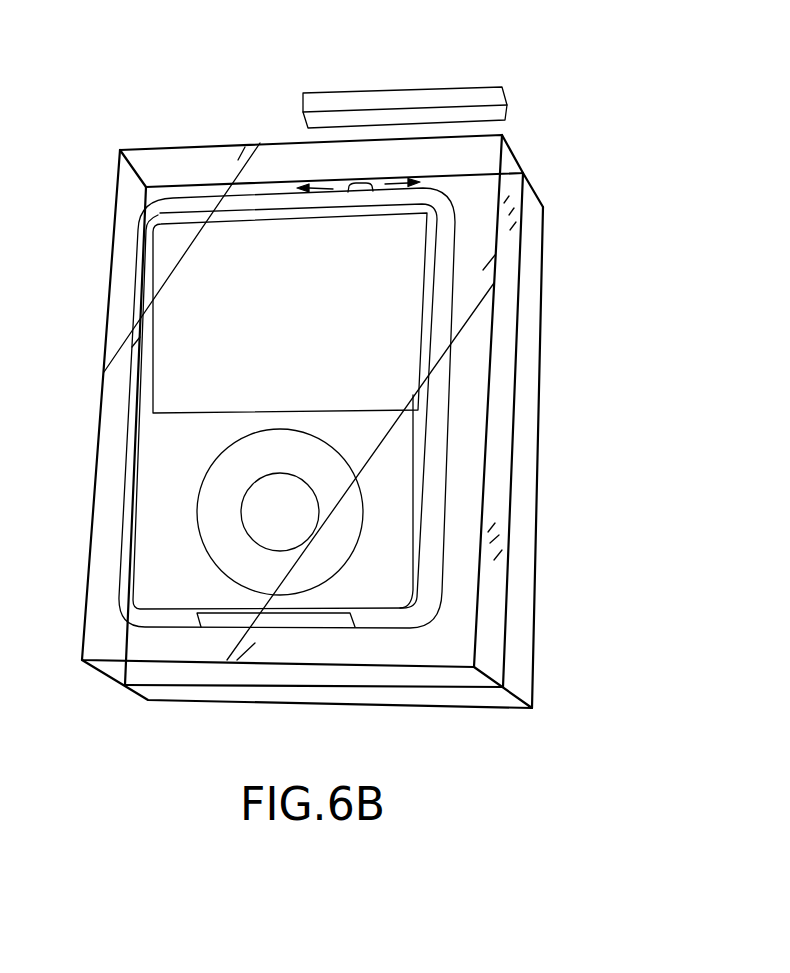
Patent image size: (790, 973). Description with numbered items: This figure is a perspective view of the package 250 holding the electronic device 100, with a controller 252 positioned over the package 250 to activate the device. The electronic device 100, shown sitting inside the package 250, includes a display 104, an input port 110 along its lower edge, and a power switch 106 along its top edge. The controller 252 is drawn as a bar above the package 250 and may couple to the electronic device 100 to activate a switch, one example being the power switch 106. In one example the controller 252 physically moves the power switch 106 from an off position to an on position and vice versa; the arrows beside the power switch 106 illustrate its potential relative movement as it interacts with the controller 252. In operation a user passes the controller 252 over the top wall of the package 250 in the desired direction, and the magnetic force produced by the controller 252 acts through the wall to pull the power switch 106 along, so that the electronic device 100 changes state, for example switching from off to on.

The electronic device 100 is at (397, 540).
The display 104 is at (413, 317).
The power switch 106 is at (372, 182).
The input port 110 is at (293, 630).
The package 250 is at (582, 419).
The controller 252 is at (395, 93).